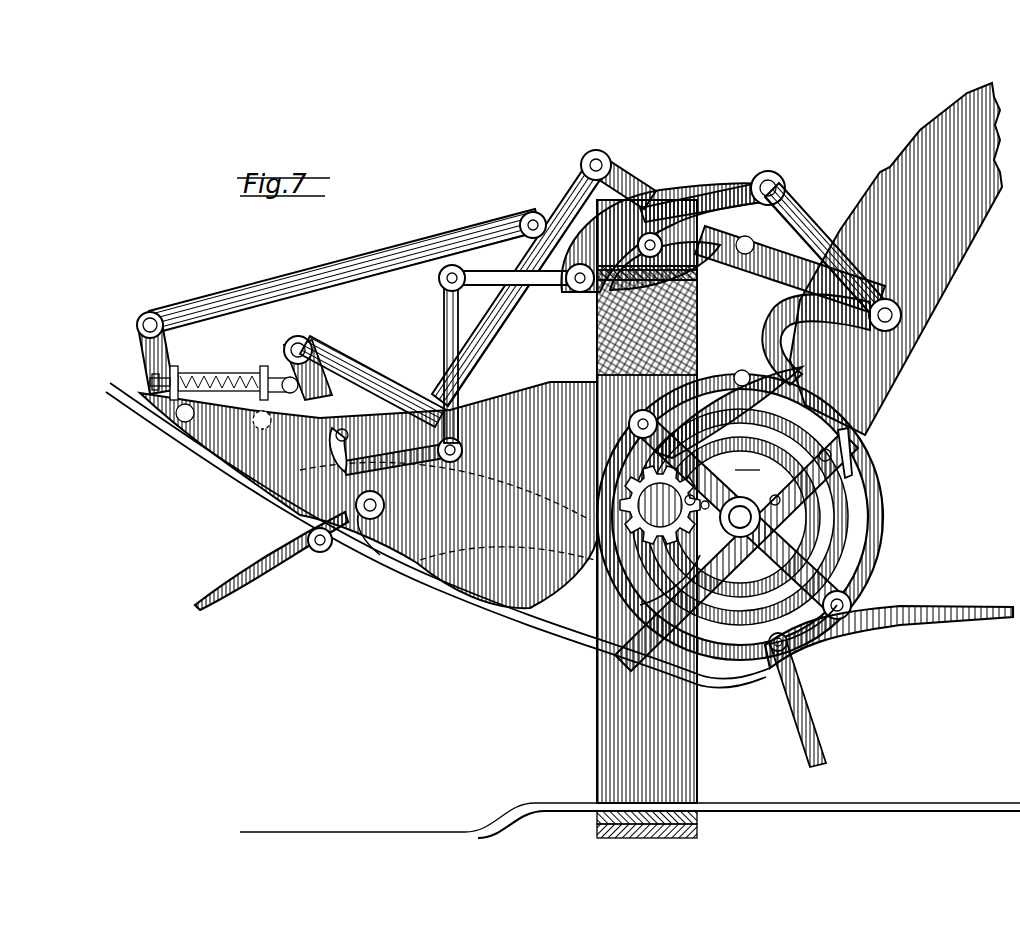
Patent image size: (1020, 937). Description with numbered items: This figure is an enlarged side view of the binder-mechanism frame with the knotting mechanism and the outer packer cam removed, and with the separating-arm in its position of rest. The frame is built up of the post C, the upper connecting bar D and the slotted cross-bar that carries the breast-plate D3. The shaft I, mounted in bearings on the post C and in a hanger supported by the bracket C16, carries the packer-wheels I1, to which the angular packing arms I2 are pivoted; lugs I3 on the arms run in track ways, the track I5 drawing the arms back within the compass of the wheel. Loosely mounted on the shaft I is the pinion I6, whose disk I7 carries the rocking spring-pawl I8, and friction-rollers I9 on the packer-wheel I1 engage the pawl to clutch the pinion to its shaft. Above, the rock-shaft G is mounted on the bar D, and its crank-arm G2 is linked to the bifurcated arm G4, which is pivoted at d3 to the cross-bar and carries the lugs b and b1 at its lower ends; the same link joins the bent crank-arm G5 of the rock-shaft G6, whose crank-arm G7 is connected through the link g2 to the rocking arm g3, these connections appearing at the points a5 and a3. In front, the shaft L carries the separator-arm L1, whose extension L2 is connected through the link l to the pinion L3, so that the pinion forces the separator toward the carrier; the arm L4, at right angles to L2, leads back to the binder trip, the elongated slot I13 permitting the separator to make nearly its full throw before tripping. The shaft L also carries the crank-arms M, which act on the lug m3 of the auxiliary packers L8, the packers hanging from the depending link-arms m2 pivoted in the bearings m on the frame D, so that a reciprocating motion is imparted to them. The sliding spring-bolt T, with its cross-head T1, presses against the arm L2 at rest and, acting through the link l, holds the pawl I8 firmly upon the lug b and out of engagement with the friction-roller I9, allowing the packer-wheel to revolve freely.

The link g2 is at (345, 271).
The rocking arm g3 is at (150, 312).
The sliding spring-bolt T is at (232, 372).
The cross-head T1 is at (286, 378).
The extension arm of separator-arm L2 is at (312, 342).
The link l is at (372, 386).
The lug m3 is at (396, 451).
The depending link-arms m2 is at (458, 383).
The bearings m is at (550, 284).
The track I5 is at (494, 320).
The pinion I6 is at (628, 182).
The elongated slot I13 is at (590, 178).
The crank-arm G7 is at (545, 200).
The rock-shaft G is at (650, 240).
The crank-arm G2 is at (690, 235).
The bent crank-arm G5 is at (720, 190).
The rock-shaft G6 is at (580, 292).
The bifurcated or forked arm G4 is at (772, 330).
The pivot a5 is at (782, 180).
The link a3 is at (855, 285).
The bracket C16 is at (775, 240).
The post C is at (647, 519).
The upper connecting bar D is at (647, 320).
The breast-plate D3 is at (548, 624).
The pivot d3 is at (742, 378).
The shaft I is at (740, 517).
The packer-wheels I1 is at (893, 492).
The packing arms or fingers I2 is at (805, 700).
The lugs I3 is at (775, 634).
The disk or plate I7 is at (822, 528).
The rocking spring-pawl I8 is at (726, 585).
The friction-rollers I9 is at (818, 556).
The lug b is at (660, 505).
The lug b1 is at (794, 464).
The separator-arm L1 is at (667, 506).
The pinion L3 is at (671, 521).
The auxiliary packers L8 is at (271, 561).
The arm L4 is at (316, 552).
The shaft L is at (368, 519).
The crank-arms M is at (380, 555).